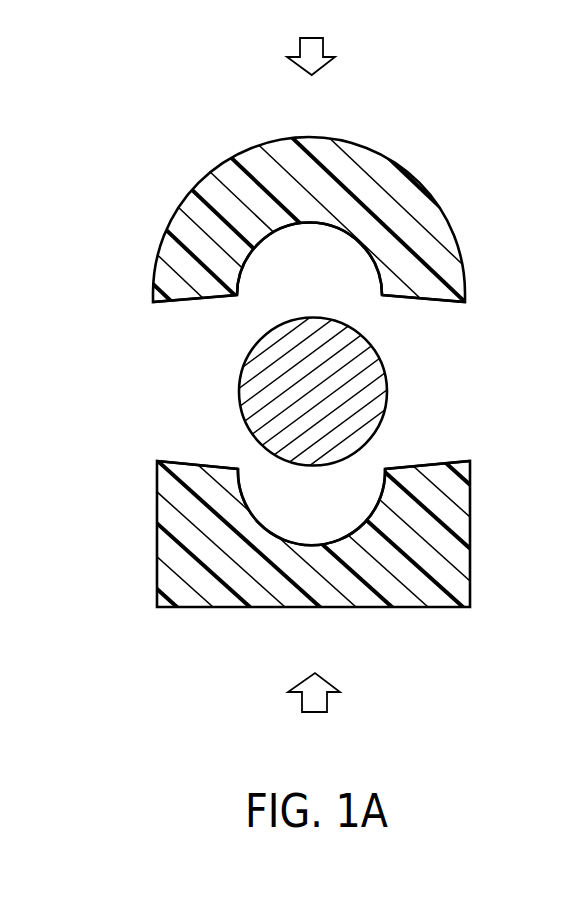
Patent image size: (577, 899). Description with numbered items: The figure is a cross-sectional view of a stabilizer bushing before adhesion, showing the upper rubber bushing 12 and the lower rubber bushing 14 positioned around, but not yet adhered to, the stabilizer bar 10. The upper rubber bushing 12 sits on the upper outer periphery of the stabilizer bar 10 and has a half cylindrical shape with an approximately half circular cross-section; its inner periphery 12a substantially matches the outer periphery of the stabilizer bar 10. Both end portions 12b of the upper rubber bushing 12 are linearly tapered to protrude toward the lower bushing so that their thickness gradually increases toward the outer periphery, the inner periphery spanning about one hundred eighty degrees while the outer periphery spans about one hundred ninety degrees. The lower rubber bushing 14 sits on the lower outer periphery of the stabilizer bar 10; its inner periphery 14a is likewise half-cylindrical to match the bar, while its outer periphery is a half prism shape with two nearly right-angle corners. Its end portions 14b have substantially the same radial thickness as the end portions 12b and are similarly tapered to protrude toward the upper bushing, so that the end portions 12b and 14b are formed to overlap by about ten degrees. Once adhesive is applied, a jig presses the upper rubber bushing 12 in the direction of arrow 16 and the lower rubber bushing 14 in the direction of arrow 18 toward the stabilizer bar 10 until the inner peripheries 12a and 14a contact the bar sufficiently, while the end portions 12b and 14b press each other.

The stabilizer bar 10 is at (386, 369).
The upper rubber bushing 12 is at (410, 168).
The inner periphery of the upper rubber bushing 12a is at (372, 300).
The end portions of the upper rubber bushing 12b is at (182, 301).
The lower rubber bushing 14 is at (470, 557).
The inner periphery of the lower rubber bushing 14a is at (382, 484).
The end portions of the lower rubber bushing 14b is at (192, 462).
The arrow 16 is at (326, 51).
The arrow 18 is at (328, 703).